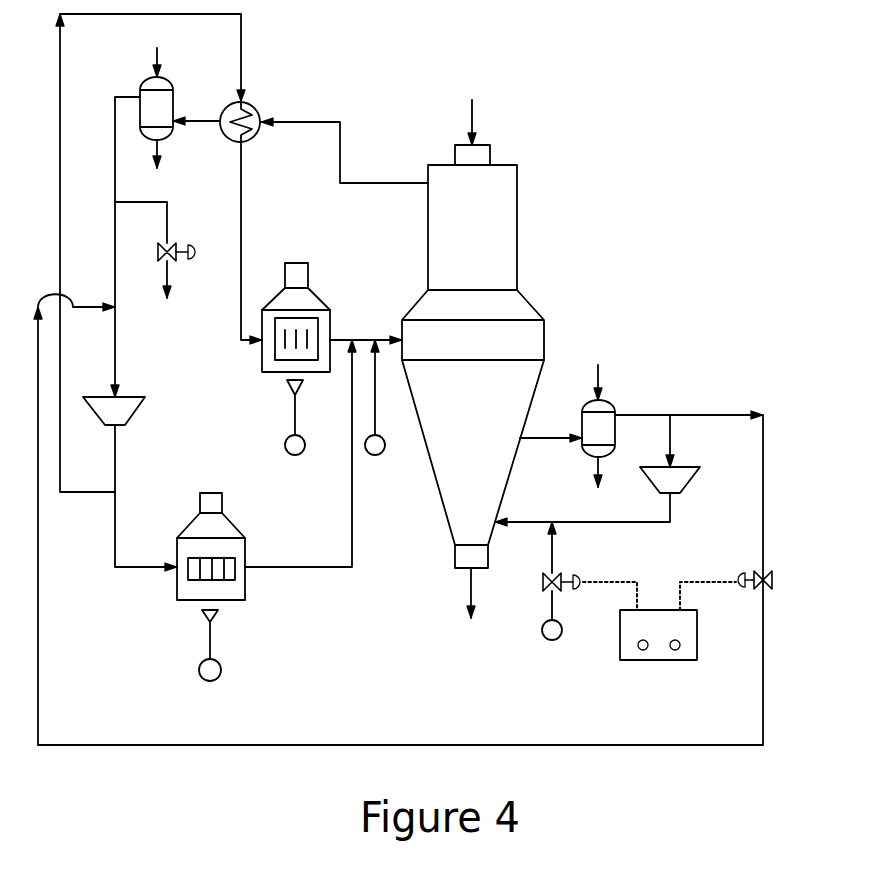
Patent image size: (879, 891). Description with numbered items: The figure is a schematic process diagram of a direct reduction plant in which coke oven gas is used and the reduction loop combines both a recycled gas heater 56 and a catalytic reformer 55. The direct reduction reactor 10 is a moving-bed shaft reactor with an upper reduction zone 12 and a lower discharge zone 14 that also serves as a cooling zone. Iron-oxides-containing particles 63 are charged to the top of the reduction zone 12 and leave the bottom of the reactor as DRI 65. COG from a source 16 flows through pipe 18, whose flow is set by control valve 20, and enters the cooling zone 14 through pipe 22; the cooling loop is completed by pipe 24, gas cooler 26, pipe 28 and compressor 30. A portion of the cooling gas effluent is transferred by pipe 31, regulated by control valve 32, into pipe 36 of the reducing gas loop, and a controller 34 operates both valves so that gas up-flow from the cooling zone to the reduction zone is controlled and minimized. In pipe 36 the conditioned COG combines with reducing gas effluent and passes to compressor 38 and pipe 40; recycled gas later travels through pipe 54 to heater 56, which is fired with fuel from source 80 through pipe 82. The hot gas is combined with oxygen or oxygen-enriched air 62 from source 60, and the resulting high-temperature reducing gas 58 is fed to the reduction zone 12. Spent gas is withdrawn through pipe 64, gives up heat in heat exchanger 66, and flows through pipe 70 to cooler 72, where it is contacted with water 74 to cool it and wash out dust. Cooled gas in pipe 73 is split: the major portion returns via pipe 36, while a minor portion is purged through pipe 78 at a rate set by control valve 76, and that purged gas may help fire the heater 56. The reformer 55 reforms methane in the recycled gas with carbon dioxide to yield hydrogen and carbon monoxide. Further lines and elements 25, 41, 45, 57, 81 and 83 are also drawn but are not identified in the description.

The direct reduction reactor 10 is at (530, 305).
The reduction zone 12 is at (456, 252).
The discharge zone 14 is at (456, 490).
The COG source 16 is at (540, 633).
The pipe 18 is at (548, 610).
The control valve 20 is at (563, 568).
The pipe 22 is at (533, 520).
The pipe 24 is at (540, 440).
The separator inlet line 25 is at (597, 375).
The gas cooler 26 is at (613, 400).
The pipe 28 is at (672, 445).
The compressor 30 is at (690, 480).
The pipe 31 is at (765, 472).
The control valve 32 is at (775, 590).
The controller 34 is at (620, 648).
The pipe 36 is at (113, 220).
The compressor 38 is at (130, 420).
The pipe 40 is at (117, 445).
The line from heat exchanger to filter 41 is at (243, 222).
The recycle line 45 is at (72, 496).
The pipe 54 is at (115, 542).
The catalytic reformer 55 is at (318, 292).
The heater 56 is at (235, 530).
The filter outlet line 57 is at (352, 465).
The reducing gas 58 is at (340, 335).
The oxygen source 60 is at (385, 453).
The oxygen or oxygen-enriched air 62 is at (377, 397).
The iron-oxides-containing particles 63 is at (478, 133).
The pipe 64 is at (335, 118).
The DRI 65 is at (470, 592).
The heat exchanger 66 is at (260, 103).
The pipe 70 is at (190, 125).
The cooler 72 is at (172, 80).
The pipe 73 is at (115, 181).
The water 74 is at (150, 63).
The control valve 76 is at (180, 245).
The pipe 78 is at (167, 200).
The fuel source 80 is at (285, 447).
The sensor probe 81 is at (208, 645).
The pipe 82 is at (288, 398).
The sensor 83 is at (198, 673).